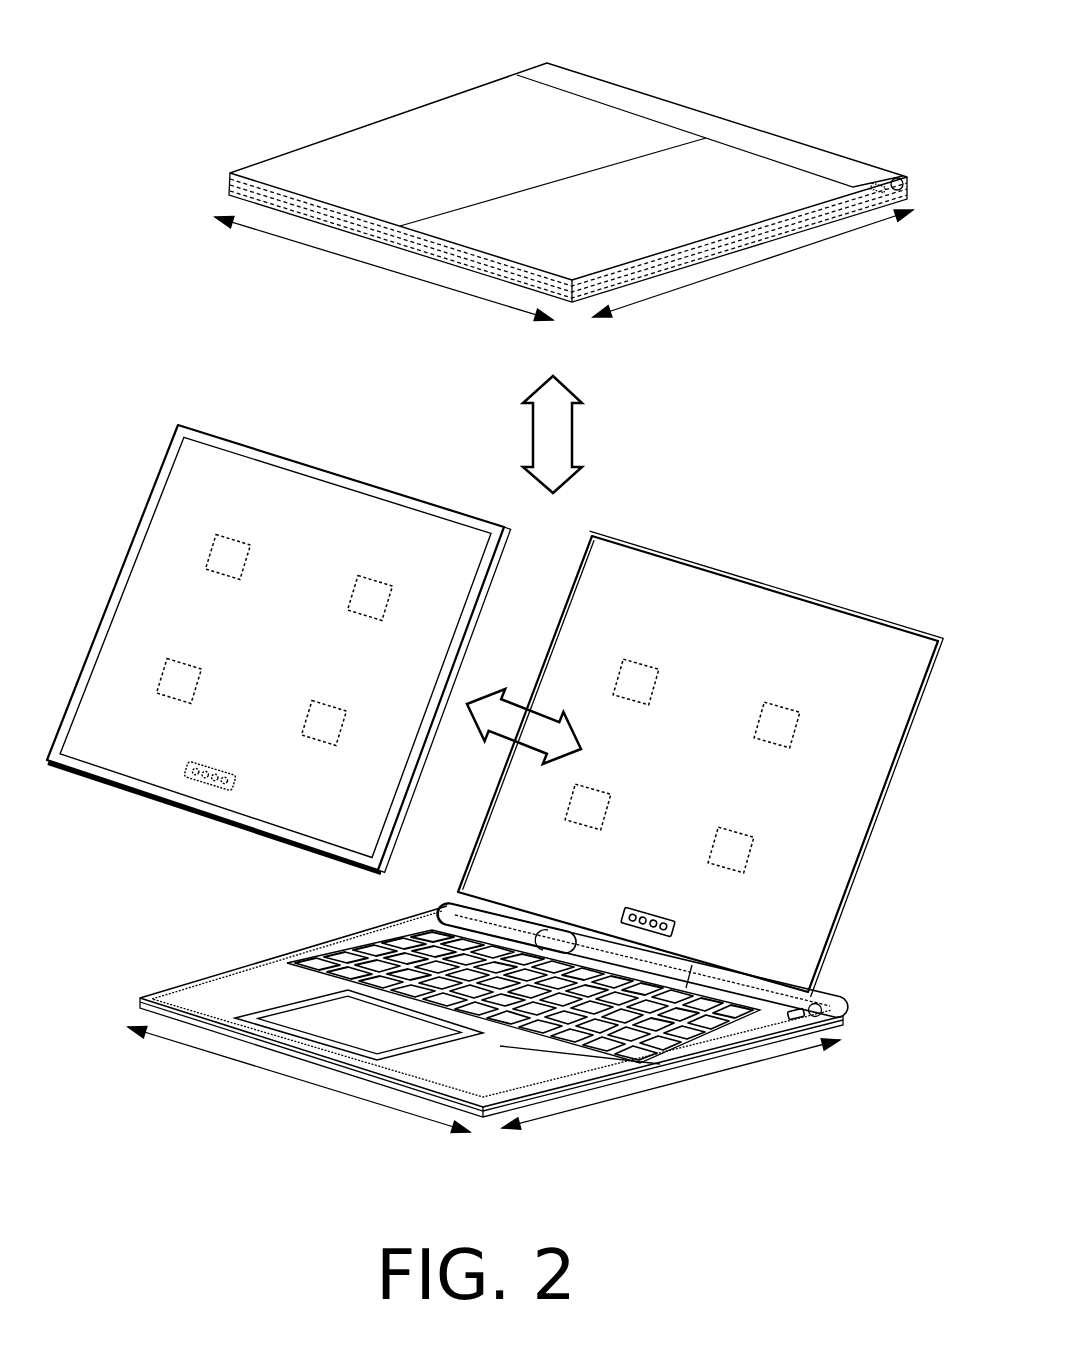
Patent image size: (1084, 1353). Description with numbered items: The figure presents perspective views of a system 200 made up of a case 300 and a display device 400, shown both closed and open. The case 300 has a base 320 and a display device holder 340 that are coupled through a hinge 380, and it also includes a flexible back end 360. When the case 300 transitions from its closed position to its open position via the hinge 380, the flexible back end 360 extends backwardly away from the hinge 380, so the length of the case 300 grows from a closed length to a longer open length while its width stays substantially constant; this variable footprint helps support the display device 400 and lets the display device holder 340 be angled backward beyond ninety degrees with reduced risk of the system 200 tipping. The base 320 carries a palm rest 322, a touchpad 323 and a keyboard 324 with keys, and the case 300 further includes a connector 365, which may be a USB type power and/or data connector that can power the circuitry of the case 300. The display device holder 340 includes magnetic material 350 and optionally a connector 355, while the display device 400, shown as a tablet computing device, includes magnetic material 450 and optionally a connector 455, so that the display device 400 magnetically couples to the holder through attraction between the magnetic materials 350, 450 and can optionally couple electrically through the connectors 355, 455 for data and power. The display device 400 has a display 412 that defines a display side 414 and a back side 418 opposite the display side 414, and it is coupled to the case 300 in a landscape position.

The system 200 is at (320, 23).
The case 300 is at (285, 155).
The base 320 is at (228, 190).
The palm rest 322 is at (502, 1081).
The touchpad 323 is at (372, 1034).
The keyboard 324 is at (531, 997).
The display device holder 340 is at (445, 95).
The magnetic material 350 is at (809, 672).
The connector 355 is at (648, 897).
The flexible back end 360 is at (752, 125).
The connector 365 is at (797, 1008).
The hinge 380 is at (674, 966).
The display device 400 is at (572, 292).
The display 412 is at (153, 543).
The display side 414 is at (297, 650).
The back side 418 is at (253, 850).
The magnetic material 450 is at (312, 535).
The connector 455 is at (254, 794).